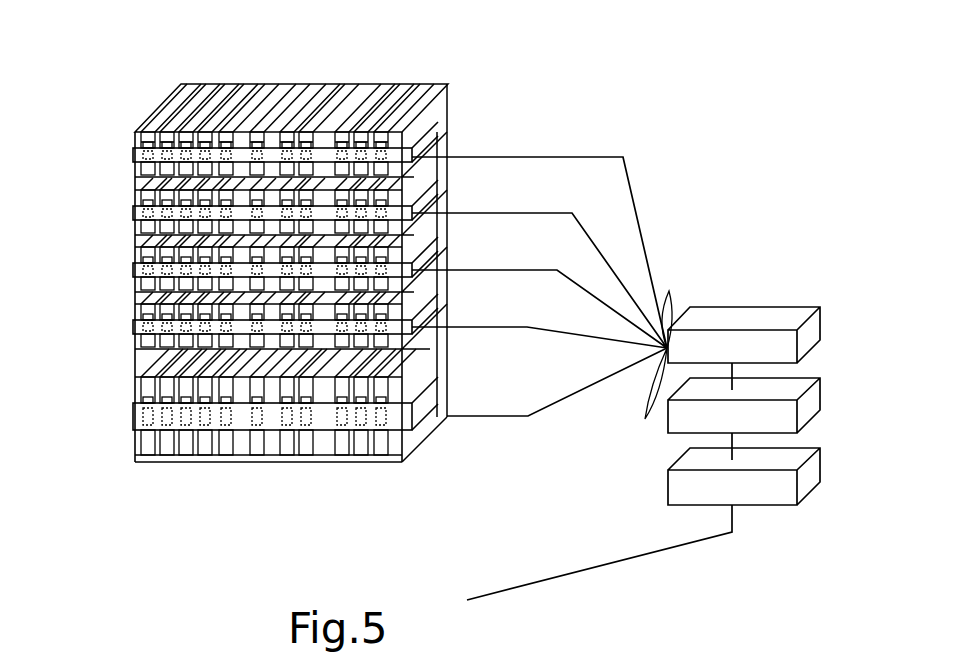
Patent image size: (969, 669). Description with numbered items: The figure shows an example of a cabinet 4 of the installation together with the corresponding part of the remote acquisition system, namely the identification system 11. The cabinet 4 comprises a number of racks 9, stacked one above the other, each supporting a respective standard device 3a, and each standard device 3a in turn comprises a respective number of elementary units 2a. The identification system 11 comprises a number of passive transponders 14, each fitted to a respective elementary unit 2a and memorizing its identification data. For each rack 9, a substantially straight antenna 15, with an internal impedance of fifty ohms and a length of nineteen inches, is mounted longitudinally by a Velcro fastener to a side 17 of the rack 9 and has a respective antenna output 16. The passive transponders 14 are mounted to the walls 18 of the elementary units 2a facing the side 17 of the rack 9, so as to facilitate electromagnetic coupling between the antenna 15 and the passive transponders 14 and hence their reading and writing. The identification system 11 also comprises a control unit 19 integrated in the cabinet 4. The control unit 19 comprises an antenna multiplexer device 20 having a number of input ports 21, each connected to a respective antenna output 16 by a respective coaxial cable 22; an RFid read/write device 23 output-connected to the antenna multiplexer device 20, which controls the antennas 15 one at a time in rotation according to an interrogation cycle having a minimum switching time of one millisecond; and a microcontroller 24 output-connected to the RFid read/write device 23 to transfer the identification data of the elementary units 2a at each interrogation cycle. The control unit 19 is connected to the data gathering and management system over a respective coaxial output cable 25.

The elementary unit 2a is at (151, 458).
The standard device 3a is at (317, 72).
The cabinet 4 is at (676, 124).
The rack 9 is at (150, 118).
The identification system 11 is at (683, 203).
The passive transponder 14 is at (142, 409).
The antenna 15 is at (400, 424).
The antenna output 16 is at (448, 418).
The side of rack 17 is at (457, 373).
The wall of elementary unit 18 is at (148, 388).
The control unit 19 is at (770, 397).
The antenna multiplexer device 20 is at (815, 327).
The input port 21 is at (668, 290).
The coaxial cable 22 is at (592, 388).
The RFid read/write device 23 is at (812, 414).
The microcontroller 24 is at (803, 490).
The coaxial output cable 25 is at (640, 560).